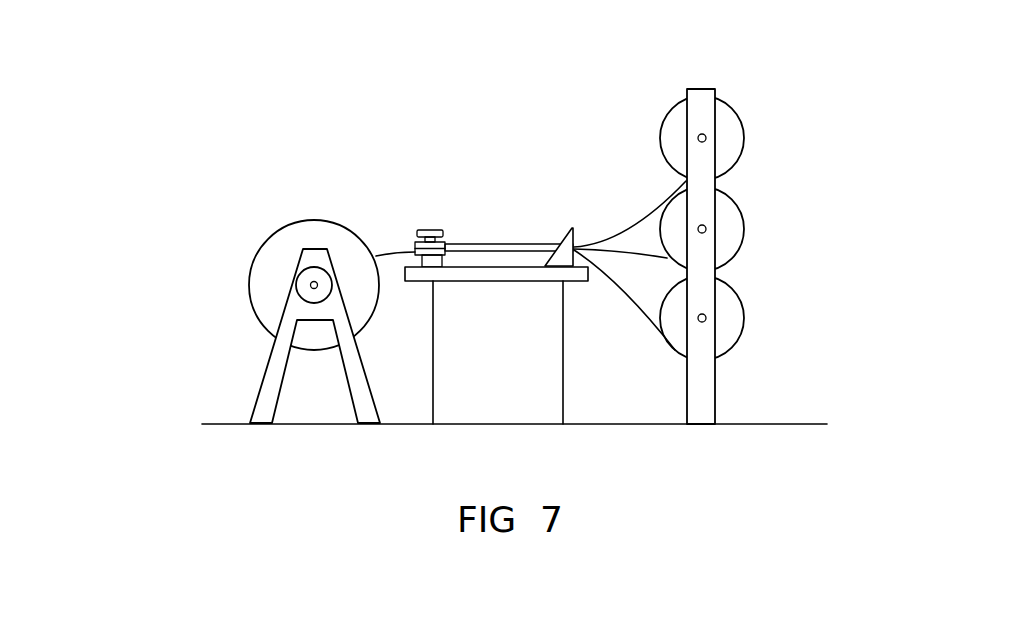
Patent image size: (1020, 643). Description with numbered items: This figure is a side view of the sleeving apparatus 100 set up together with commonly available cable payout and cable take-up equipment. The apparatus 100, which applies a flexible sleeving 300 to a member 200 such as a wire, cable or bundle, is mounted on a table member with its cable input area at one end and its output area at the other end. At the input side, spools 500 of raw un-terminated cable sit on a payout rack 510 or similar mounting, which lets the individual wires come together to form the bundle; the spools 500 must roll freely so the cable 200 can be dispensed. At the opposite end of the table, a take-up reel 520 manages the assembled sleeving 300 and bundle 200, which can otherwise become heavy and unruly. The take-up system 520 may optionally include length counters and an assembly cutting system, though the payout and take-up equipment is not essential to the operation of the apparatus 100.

The apparatus 100 is at (489, 254).
The member 200 is at (587, 261).
The flexible sleeving 300 is at (351, 196).
The spools 500 is at (777, 206).
The payout rack 510 is at (790, 256).
The take-up reel 520 is at (243, 312).